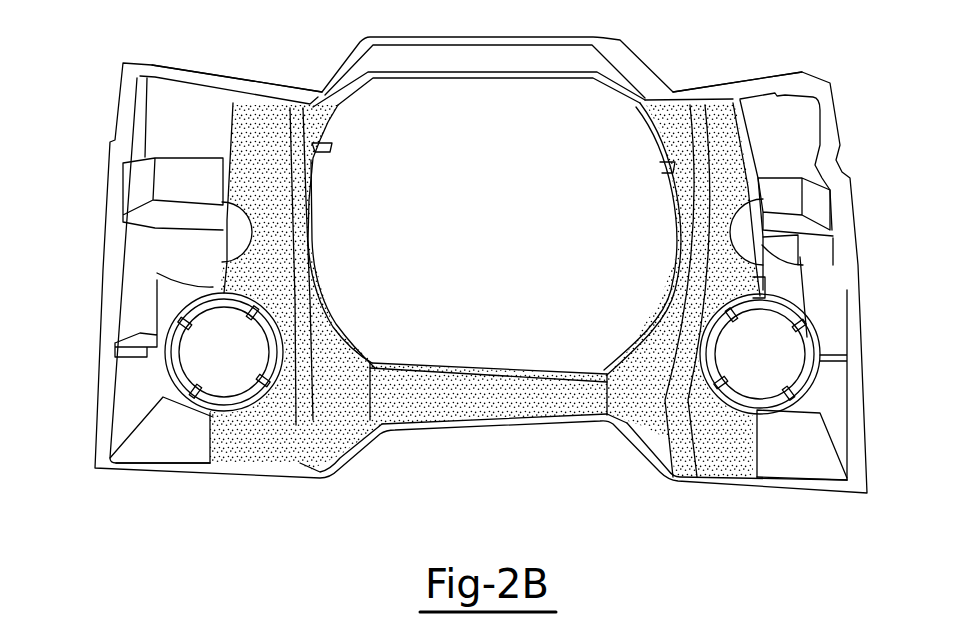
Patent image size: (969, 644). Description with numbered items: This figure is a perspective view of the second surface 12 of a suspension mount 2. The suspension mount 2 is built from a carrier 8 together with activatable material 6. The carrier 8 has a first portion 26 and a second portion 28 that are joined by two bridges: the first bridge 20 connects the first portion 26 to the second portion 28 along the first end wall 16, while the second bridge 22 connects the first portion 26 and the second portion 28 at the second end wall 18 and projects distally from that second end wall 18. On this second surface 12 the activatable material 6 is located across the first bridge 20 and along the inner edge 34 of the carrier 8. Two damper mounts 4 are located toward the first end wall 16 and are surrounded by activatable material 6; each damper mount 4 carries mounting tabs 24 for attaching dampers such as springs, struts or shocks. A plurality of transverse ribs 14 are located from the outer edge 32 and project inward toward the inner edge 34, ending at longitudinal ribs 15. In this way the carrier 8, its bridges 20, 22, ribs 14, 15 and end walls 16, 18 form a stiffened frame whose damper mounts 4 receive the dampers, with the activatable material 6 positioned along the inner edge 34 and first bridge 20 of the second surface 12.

The suspension mount 2 is at (100, 128).
The damper mounts 4 is at (250, 342).
The activatable material 6 is at (285, 152).
The carrier 8 is at (613, 485).
The second surface 12 is at (870, 190).
The transverse ribs 14 is at (147, 345).
The longitudinal ribs 15 is at (280, 127).
The first end wall 16 is at (176, 470).
The second end wall 18 is at (205, 80).
The first bridge 20 is at (505, 428).
The second bridge 22 is at (590, 75).
The mounting tabs 24 is at (722, 378).
The first portion 26 is at (790, 512).
The second portion 28 is at (204, 495).
The outer edge 32 is at (107, 360).
The inner edge 34 is at (300, 268).